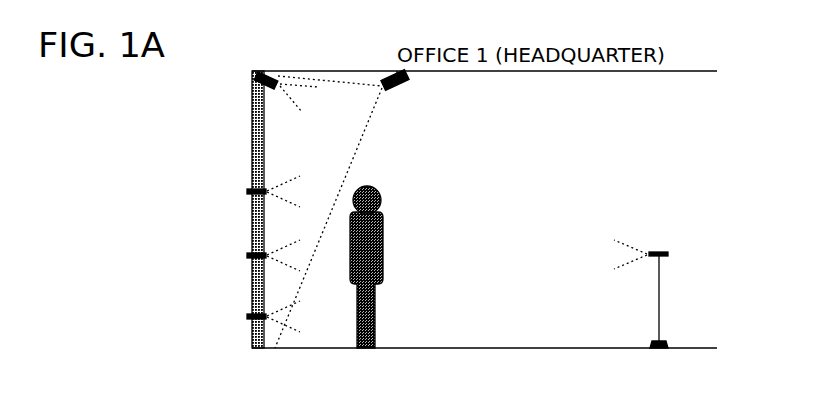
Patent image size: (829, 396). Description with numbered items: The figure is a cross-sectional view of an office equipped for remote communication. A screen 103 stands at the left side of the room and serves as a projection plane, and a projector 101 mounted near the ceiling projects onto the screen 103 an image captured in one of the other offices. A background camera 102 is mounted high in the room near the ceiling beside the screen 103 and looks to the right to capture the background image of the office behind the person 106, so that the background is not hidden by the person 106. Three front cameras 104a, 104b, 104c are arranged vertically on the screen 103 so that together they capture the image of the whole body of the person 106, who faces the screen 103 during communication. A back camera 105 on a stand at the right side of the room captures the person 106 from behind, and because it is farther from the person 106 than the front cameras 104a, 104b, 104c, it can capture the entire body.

The projector 101 is at (401, 92).
The background camera 102 is at (267, 73).
The screen 103 is at (251, 128).
The front camera 104a is at (247, 191).
The front camera 104b is at (247, 254).
The front camera 104c is at (247, 315).
The back camera 105 is at (669, 254).
The person 106 is at (384, 259).